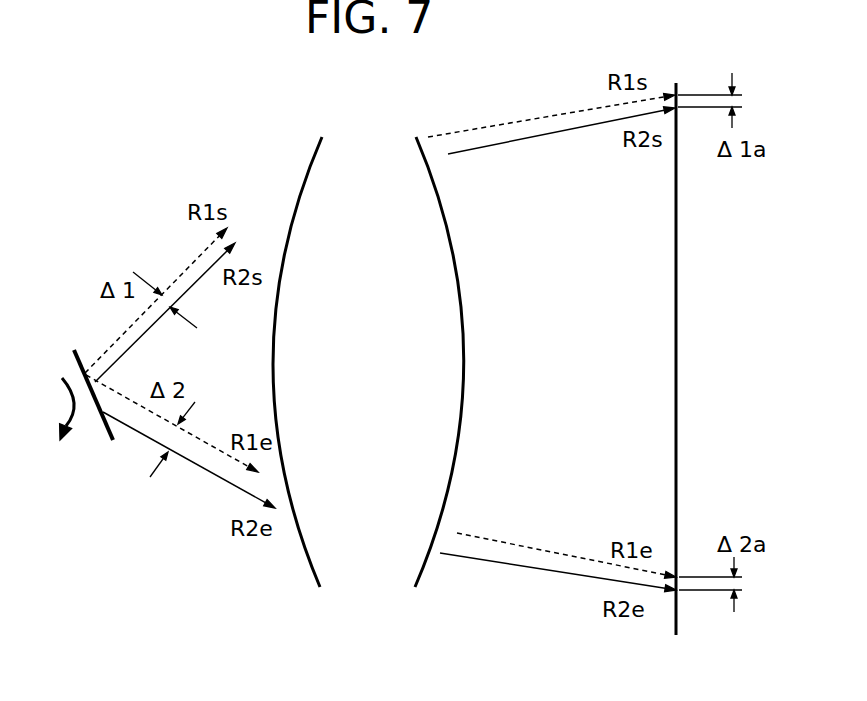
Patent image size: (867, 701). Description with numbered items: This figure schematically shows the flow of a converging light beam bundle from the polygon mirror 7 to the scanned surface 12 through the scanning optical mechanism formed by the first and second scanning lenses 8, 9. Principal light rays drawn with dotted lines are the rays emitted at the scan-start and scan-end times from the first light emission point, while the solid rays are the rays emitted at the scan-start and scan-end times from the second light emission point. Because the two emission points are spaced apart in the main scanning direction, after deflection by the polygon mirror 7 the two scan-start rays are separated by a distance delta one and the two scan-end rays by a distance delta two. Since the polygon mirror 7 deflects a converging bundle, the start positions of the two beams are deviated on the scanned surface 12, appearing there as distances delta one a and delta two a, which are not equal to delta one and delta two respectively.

The polygon mirror 7 is at (108, 428).
The first scanning lens 8 is at (368, 328).
The second scanning lens 9 is at (368, 138).
The scanned surface 12 is at (678, 625).